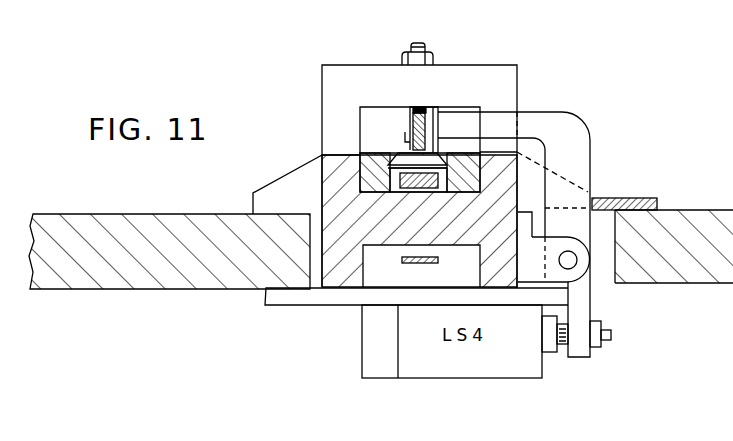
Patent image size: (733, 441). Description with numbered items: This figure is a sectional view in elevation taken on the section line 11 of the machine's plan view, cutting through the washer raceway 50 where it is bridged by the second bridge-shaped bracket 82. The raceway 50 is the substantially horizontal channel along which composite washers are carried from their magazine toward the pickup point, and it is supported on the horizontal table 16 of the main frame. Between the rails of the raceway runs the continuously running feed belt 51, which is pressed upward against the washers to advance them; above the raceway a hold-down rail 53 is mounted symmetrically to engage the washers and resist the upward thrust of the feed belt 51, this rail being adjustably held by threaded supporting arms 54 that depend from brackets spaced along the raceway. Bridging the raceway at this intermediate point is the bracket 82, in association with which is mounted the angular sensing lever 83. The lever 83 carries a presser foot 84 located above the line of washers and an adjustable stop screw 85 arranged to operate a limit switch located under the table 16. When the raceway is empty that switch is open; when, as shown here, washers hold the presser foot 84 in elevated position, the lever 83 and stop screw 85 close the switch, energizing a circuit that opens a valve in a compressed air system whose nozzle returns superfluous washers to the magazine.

The section line 11— 11 is at (402, 152).
The horizontal table 16 is at (105, 283).
The raceway 50 is at (467, 156).
The feed belt 51 is at (398, 190).
The hold-down rail 53 is at (412, 127).
The threaded supporting arms 54 is at (418, 43).
The bridge-shaped bracket 82 is at (330, 136).
The angular sensing lever 83 is at (580, 138).
The presser foot 84 is at (434, 110).
The adjustable stop screw 85 is at (612, 338).